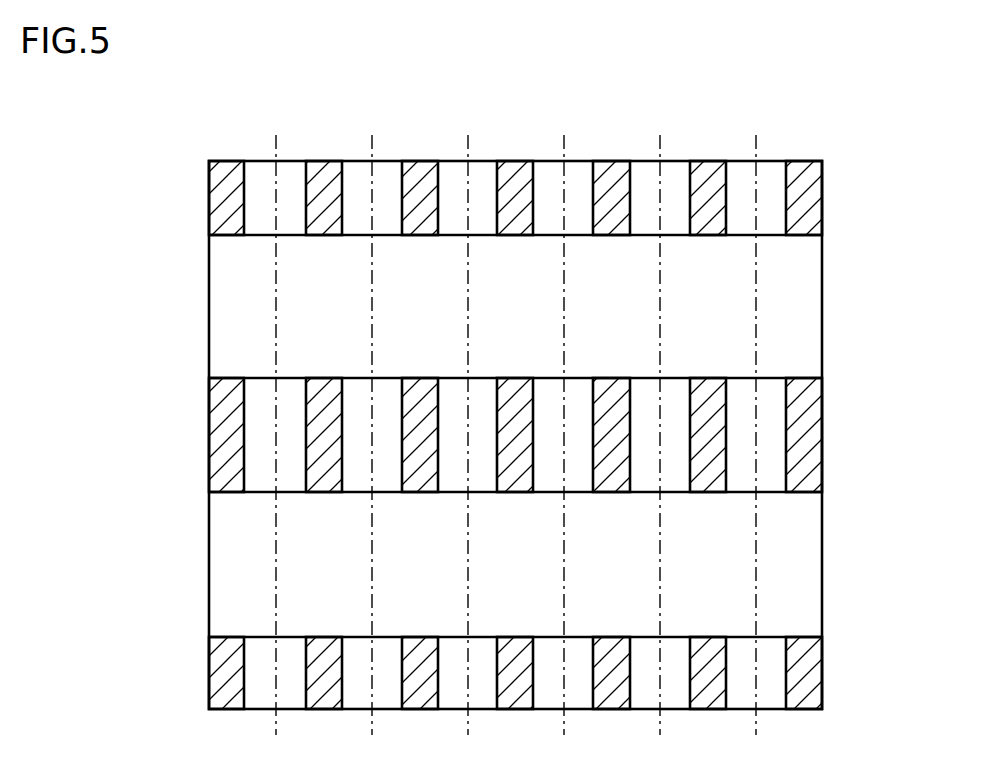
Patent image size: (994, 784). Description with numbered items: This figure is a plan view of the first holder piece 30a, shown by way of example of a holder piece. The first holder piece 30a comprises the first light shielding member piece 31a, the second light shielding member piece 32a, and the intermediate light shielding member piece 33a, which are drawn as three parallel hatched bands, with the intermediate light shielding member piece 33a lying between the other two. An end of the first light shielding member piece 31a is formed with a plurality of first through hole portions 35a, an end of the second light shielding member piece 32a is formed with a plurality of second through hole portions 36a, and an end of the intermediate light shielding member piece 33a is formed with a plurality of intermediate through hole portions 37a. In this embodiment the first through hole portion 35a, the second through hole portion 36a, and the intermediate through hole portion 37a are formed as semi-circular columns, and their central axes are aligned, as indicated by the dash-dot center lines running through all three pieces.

The first holder piece 30a is at (848, 174).
The first light shielding member piece 31a is at (806, 204).
The second light shielding member piece 32a is at (806, 678).
The intermediate light shielding member piece 33a is at (806, 452).
The first through hole portion 35a is at (290, 173).
The second through hole portion 36a is at (262, 698).
The intermediate through hole portion 37a is at (265, 387).